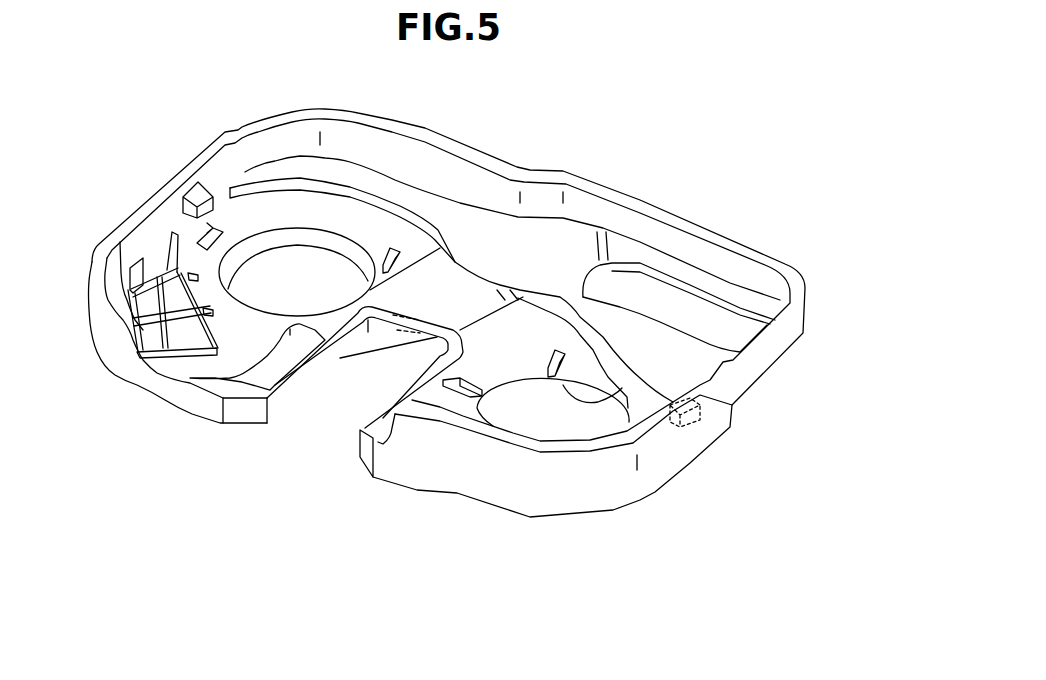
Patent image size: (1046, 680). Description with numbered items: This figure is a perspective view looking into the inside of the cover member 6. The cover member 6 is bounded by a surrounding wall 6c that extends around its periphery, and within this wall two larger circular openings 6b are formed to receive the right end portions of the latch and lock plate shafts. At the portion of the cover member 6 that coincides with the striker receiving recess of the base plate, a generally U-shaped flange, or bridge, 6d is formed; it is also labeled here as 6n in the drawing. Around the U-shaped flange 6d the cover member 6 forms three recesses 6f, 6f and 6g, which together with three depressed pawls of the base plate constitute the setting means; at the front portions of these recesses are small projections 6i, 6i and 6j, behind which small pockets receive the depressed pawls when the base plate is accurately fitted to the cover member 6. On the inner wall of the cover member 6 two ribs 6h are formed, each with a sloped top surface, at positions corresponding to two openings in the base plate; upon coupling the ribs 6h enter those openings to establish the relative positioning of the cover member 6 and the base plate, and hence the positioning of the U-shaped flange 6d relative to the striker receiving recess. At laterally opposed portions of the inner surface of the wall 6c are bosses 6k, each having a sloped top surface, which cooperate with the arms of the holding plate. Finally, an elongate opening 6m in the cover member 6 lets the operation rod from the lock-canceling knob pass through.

The cover member 6 is at (503, 524).
The circular opening 6b is at (247, 248).
The surrounding wall 6c is at (461, 150).
The U-shaped flange 6d is at (283, 400).
The recess 6f is at (233, 380).
The recess 6g is at (462, 300).
The rib 6h is at (396, 248).
The small projection 6i is at (247, 392).
The small projection 6j is at (423, 312).
The boss 6k is at (199, 195).
The elongate opening 6m is at (720, 315).
The channel opening 6n is at (388, 338).